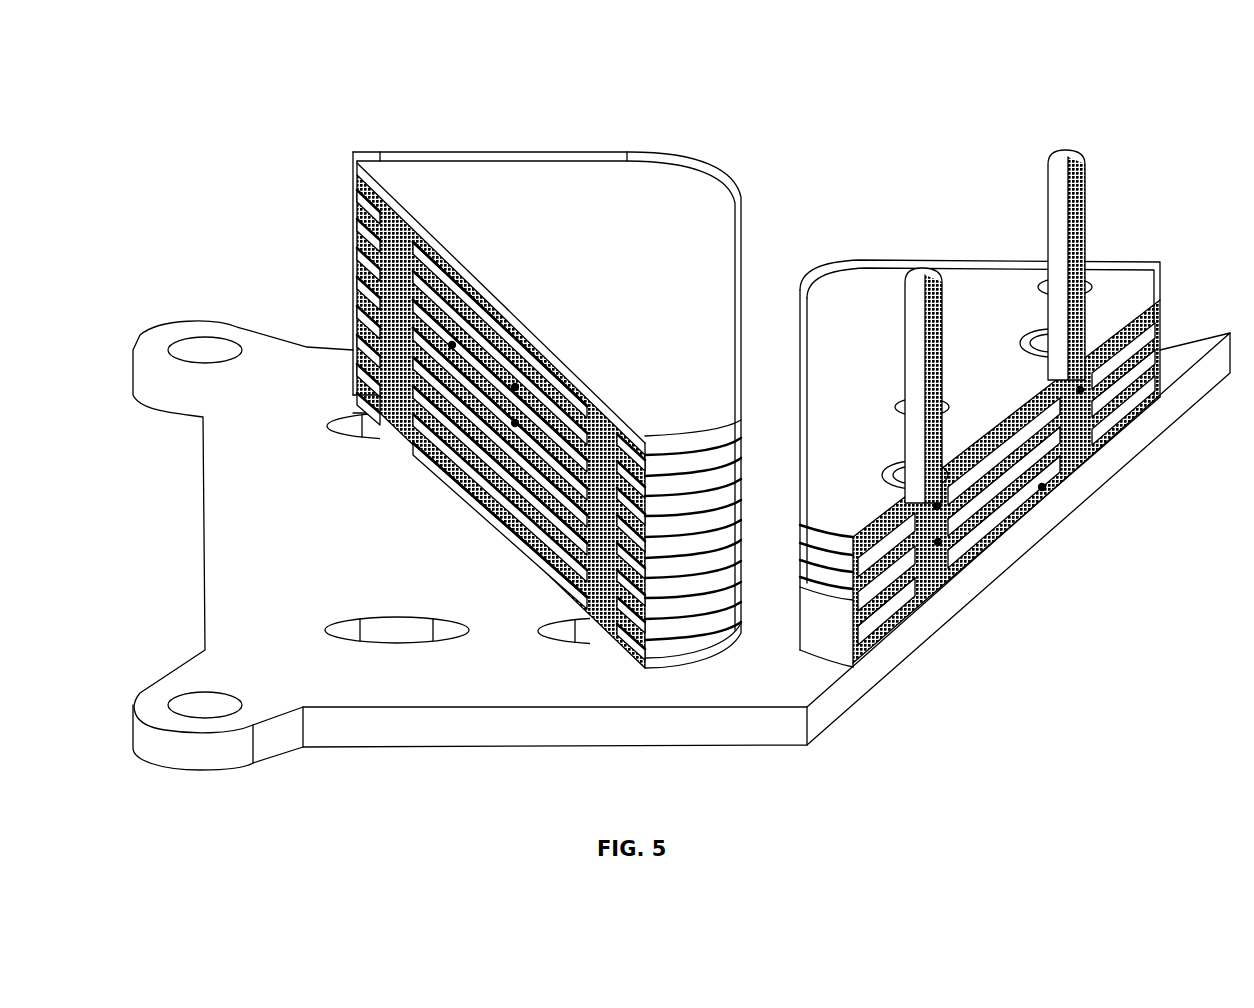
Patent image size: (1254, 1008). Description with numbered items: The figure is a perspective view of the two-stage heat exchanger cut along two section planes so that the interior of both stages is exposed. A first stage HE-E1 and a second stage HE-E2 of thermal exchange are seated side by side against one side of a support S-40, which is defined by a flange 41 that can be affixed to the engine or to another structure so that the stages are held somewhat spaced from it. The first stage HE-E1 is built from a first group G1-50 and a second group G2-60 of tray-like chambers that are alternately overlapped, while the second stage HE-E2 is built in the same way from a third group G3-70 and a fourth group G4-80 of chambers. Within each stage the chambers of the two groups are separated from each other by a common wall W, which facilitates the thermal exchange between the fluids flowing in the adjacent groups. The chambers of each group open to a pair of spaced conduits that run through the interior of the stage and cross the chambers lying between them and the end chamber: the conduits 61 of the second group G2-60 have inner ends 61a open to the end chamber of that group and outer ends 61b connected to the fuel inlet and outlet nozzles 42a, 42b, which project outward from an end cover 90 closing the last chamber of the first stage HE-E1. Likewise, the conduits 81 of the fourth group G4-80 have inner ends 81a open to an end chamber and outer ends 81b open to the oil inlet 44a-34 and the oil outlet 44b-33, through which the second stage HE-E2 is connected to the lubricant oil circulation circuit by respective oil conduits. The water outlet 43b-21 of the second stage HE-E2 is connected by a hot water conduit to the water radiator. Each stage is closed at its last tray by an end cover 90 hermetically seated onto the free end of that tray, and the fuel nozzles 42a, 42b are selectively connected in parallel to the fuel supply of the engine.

The support flange S-40 is at (197, 302).
The flange 41 is at (770, 686).
The water outlet and hot water conduit 43b-21 is at (406, 638).
The oil inlet and oil conduit 44a-34 is at (360, 433).
The oil outlet and oil conduit 44b-33 is at (564, 634).
The end cover 90 is at (445, 183).
The second stage of thermal exchange HE-E2 is at (764, 193).
The first stage of thermal exchange HE-E1 is at (971, 246).
The fourth group of chambers G4-80 is at (457, 313).
The third group of chambers G3-70 is at (517, 362).
The first group of chambers G1-50 is at (1016, 452).
The second group of chambers G2-60 is at (1010, 476).
The conduits of the fourth group 81 is at (395, 308).
The inner ends of conduits 81a is at (395, 248).
The outer ends of conduits 81b is at (395, 387).
The conduits of the second group 61 is at (1085, 433).
The inner ends of conduits 61a is at (1073, 417).
The outer ends of conduits 61b is at (1063, 392).
The common wall W is at (452, 345).
The fuel inlet nozzle 42a is at (903, 330).
The fuel outlet nozzle 42b is at (1094, 164).